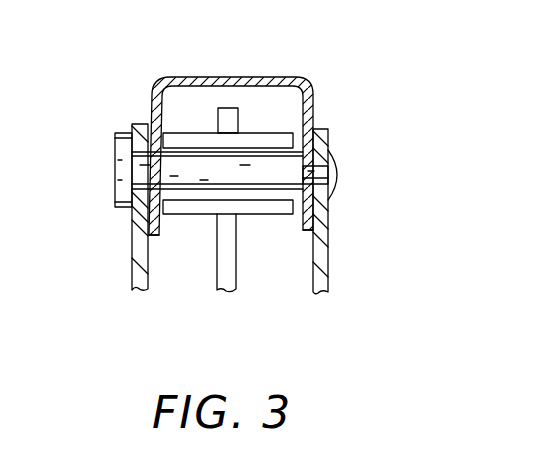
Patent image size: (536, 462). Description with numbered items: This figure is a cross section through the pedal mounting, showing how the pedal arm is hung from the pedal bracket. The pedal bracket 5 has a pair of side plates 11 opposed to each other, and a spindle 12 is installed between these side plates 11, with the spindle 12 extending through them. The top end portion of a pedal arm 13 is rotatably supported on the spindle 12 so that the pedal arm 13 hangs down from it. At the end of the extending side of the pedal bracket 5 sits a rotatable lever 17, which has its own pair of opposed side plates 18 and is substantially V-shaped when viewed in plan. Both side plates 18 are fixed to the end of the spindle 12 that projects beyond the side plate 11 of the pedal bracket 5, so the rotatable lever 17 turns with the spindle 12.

The pedal bracket 5 is at (280, 76).
The side plates 11 is at (152, 233).
The spindle 12 is at (180, 163).
The pedal arm 13 is at (236, 282).
The rotatable lever 17 is at (322, 279).
The side plates 18 is at (144, 264).